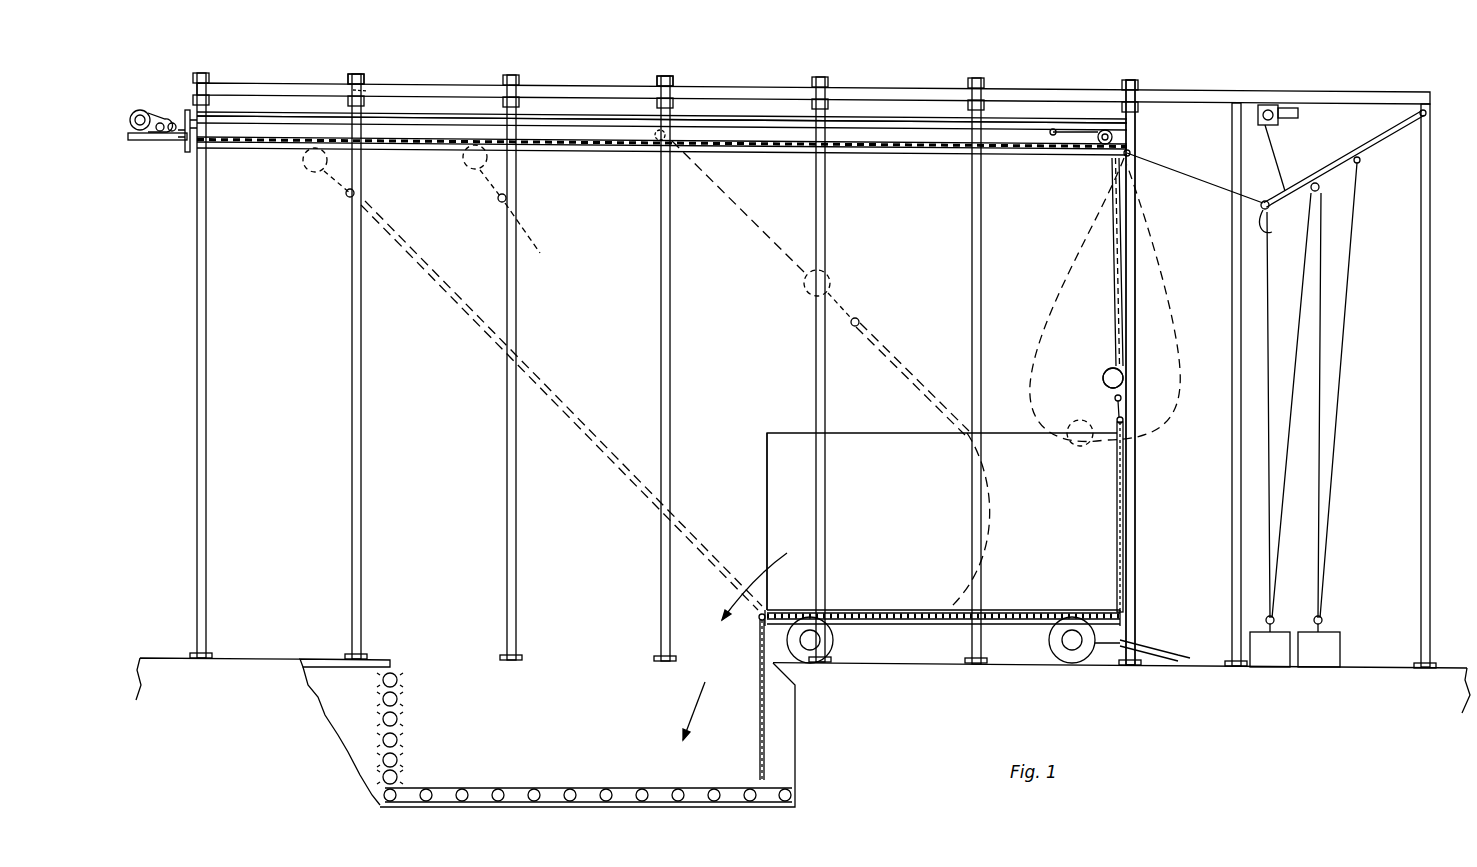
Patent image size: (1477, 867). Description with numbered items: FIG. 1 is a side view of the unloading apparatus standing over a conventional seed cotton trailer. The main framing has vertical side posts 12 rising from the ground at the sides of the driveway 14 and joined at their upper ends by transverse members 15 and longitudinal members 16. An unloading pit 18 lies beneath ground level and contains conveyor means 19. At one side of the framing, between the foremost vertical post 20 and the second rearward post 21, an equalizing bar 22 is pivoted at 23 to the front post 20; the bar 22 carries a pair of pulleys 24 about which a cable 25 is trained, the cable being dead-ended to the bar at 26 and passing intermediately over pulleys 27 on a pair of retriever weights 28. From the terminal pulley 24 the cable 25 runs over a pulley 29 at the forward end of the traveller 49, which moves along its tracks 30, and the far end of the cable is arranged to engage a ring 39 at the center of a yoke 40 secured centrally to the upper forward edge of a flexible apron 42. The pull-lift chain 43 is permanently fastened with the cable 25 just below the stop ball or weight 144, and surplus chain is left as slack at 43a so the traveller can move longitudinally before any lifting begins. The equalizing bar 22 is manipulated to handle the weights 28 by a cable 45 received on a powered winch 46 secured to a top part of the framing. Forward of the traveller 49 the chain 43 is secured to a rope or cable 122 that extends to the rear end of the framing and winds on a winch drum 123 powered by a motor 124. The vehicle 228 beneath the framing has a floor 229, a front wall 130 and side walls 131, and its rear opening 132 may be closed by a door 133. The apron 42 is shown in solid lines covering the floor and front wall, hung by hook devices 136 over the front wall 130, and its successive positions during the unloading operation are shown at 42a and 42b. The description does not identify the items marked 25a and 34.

The vertical side posts 12 is at (660, 312).
The driveway 14 is at (885, 665).
The transverse members 15 is at (373, 90).
The longitudinal members 16 is at (595, 95).
The unloading pit 18 is at (567, 718).
The conveyor means 19 is at (588, 788).
The foremost vertical post 20 is at (1430, 383).
The second rearward post 21 is at (1140, 535).
The equalizing bar 22 is at (1372, 140).
The pivot 23 is at (1432, 118).
The pulleys 24 is at (1268, 215).
The cable 25 is at (1350, 332).
The door swing path 25a is at (1178, 318).
The dead end 26 is at (1358, 165).
The pulleys 27 is at (1314, 616).
The retriever weights 28 is at (1318, 675).
The pulley 29 is at (1133, 158).
The tracks 30 is at (1015, 158).
The bracket 34 is at (362, 75).
The ring 39 is at (1110, 393).
The yoke 40 is at (1114, 400).
The flexible apron 42 is at (1115, 557).
The apron position 42a is at (885, 345).
The apron position 42b is at (613, 374).
The pull-lift chain 43 is at (1110, 312).
The slack 43a is at (1035, 353).
The cable 45 is at (1278, 150).
The powered winch 46 is at (1268, 105).
The traveller 49 is at (1075, 133).
The cable 122 is at (1020, 128).
The winch drum 123 is at (188, 108).
The motor 124 is at (143, 108).
The front wall 130 is at (1115, 580).
The side walls 131 is at (897, 438).
The rear opening 132 is at (765, 490).
The door 133 is at (758, 718).
The hook devices 136 is at (1107, 435).
The stop ball 144 is at (470, 175).
The vehicle 228 is at (788, 427).
The floor 229 is at (888, 610).